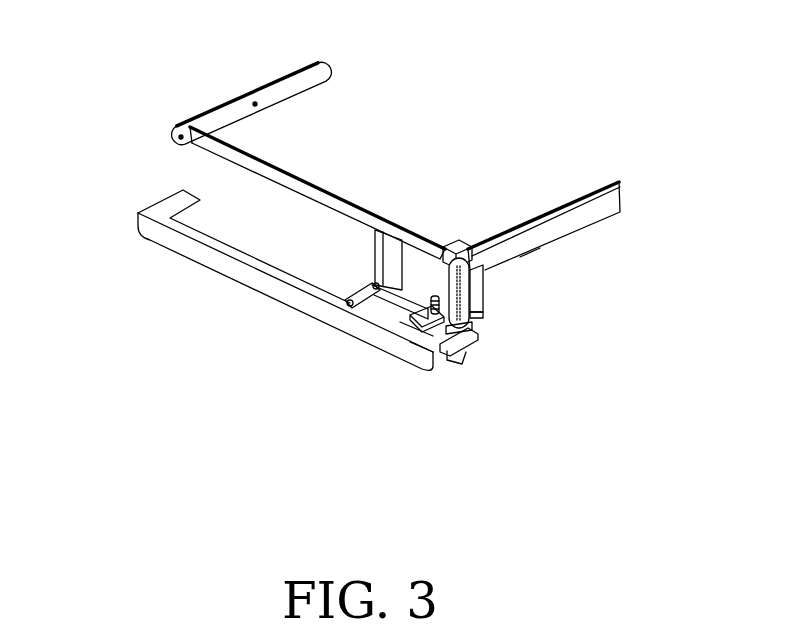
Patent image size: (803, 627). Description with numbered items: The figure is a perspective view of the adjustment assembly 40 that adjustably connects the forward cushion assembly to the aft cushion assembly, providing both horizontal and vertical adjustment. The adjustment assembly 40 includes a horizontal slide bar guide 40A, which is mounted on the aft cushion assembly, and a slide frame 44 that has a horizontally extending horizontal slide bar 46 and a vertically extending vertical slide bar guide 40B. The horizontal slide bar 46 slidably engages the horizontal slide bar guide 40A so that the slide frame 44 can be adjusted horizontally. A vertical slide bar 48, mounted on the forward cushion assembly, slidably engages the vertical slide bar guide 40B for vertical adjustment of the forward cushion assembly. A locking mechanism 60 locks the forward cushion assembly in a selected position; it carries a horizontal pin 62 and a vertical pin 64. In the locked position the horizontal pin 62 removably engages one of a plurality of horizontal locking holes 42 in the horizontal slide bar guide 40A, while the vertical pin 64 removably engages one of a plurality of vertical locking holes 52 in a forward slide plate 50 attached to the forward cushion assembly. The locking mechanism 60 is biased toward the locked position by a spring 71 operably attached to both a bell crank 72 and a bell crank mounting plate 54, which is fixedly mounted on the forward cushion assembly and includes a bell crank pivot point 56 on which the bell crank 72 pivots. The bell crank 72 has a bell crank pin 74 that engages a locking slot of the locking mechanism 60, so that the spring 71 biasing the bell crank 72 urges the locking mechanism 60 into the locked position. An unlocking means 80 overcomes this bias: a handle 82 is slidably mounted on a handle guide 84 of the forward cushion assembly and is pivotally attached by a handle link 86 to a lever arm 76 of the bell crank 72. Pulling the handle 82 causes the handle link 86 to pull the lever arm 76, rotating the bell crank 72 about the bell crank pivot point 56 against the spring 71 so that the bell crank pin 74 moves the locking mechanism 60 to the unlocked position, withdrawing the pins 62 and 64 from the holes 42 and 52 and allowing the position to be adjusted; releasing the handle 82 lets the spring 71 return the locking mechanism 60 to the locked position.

The adjustment assembly 40 is at (405, 97).
The horizontal slide bar guide 40A is at (583, 218).
The vertical slide bar guide 40B is at (393, 222).
The horizontal locking holes 42 is at (517, 256).
The slide frame 44 is at (212, 147).
The horizontal slide bar 46 is at (267, 90).
The vertical slide bar 48 is at (390, 268).
The forward slide plate 50 is at (470, 322).
The vertical locking holes 52 is at (473, 302).
The bell crank mounting plate 54 is at (430, 330).
The bell crank pivot point 56 is at (410, 310).
The locking mechanism 60 is at (460, 243).
The horizontal pin 62 is at (490, 252).
The vertical pin 64 is at (470, 262).
The spring 71 is at (420, 350).
The bell crank 72 is at (478, 312).
The bell crank pin 74 is at (476, 284).
The lever arm 76 is at (365, 322).
The unlocking means 80 is at (445, 403).
The handle 82 is at (212, 257).
The handle guide 84 is at (460, 350).
The handle link 86 is at (355, 298).